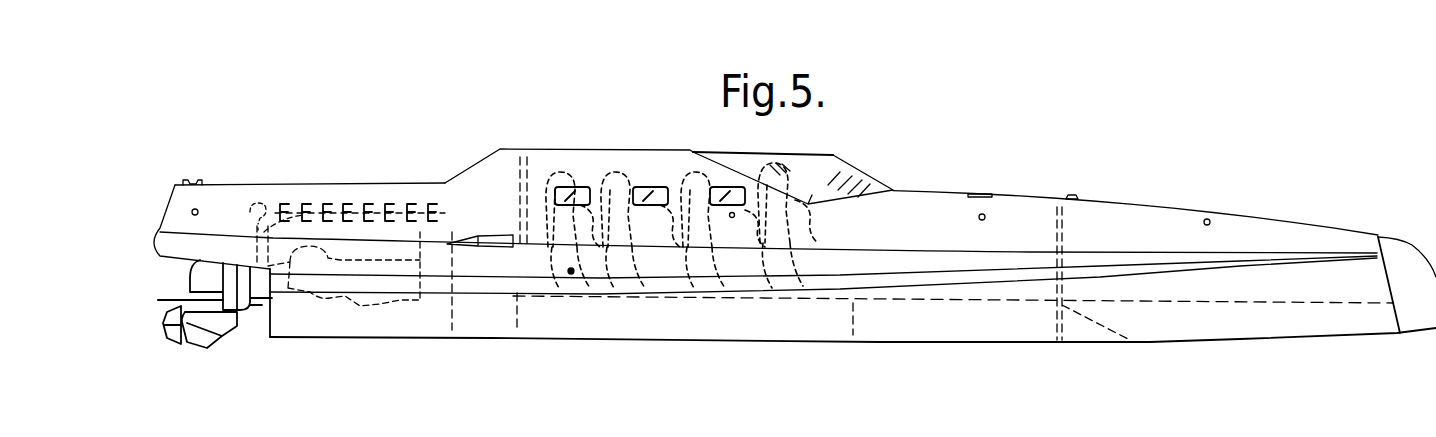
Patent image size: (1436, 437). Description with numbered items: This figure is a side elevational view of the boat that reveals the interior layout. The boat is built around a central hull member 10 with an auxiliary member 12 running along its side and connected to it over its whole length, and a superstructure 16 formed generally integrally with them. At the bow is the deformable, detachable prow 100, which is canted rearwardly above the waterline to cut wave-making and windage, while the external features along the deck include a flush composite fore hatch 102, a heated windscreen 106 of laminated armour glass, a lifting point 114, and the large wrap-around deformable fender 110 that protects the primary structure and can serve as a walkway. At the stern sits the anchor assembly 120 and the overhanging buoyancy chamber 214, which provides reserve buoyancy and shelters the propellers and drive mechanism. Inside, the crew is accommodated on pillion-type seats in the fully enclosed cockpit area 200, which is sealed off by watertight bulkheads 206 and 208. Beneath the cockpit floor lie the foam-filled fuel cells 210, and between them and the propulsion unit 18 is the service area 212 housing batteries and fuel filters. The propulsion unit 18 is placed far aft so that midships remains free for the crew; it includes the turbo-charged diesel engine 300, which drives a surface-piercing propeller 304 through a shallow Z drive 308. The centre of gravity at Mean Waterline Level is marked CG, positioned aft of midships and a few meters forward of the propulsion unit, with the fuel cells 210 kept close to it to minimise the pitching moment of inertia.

The central hull member 10 is at (1301, 344).
The auxiliary member 12 is at (932, 287).
The superstructure 16 is at (928, 236).
The propulsion unit 18 is at (380, 222).
The prow 100 is at (1430, 268).
The fore hatch 102 is at (997, 193).
The windscreen 106 is at (853, 168).
The fender 110 is at (227, 240).
The lifting point 114 is at (1077, 198).
The anchor assembly 120 is at (160, 218).
The cockpit area 200 is at (608, 140).
The watertight bulkhead 206 is at (1065, 228).
The watertight bulkhead 208 is at (447, 234).
The fuel cells 210 is at (693, 318).
The service area 212 is at (493, 312).
The buoyancy chamber 214 is at (207, 228).
The diesel engine 300 is at (365, 308).
The propeller 304 is at (168, 344).
The Z drive 308 is at (190, 290).
The centre of gravity CG is at (571, 272).